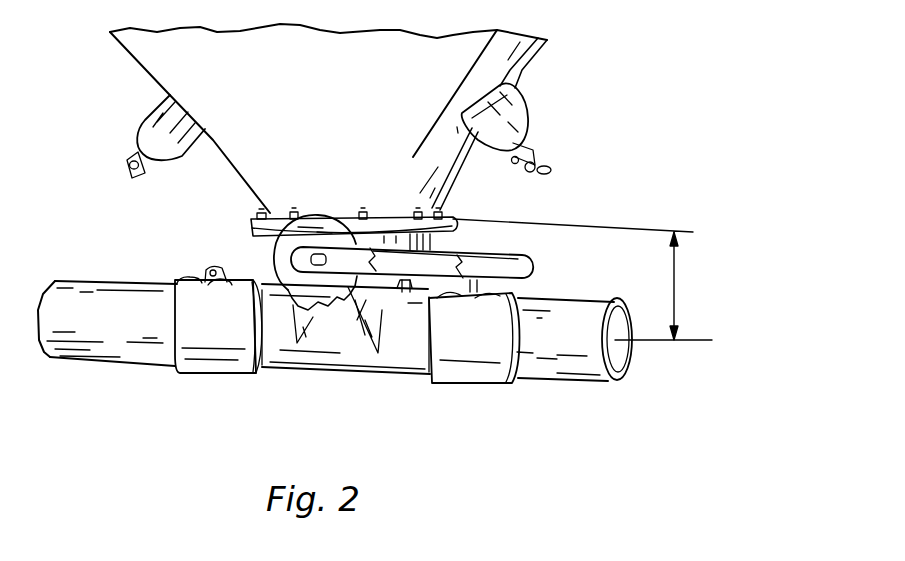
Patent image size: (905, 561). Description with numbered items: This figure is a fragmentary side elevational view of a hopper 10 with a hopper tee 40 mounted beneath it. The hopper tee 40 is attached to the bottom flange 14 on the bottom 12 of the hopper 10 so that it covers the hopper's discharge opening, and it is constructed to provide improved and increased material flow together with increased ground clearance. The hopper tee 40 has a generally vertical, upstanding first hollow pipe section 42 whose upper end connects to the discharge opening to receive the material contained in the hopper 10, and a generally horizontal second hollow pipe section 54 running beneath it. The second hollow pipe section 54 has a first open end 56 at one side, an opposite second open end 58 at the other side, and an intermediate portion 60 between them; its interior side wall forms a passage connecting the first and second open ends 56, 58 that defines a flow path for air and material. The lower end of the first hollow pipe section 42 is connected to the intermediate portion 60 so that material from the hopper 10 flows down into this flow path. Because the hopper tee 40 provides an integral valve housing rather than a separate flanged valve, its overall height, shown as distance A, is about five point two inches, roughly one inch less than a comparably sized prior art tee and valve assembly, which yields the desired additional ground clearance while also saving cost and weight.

The hopper 10 is at (622, 39).
The bottom 12 is at (452, 186).
The bottom flange 14 is at (253, 214).
The hopper tee 40 is at (408, 377).
The first hollow pipe section 42 is at (375, 293).
The second hollow pipe section 54 is at (282, 373).
The first open end 56 is at (267, 375).
The second open end 58 is at (430, 378).
The intermediate portion 60 is at (363, 375).
The distance A is at (675, 282).